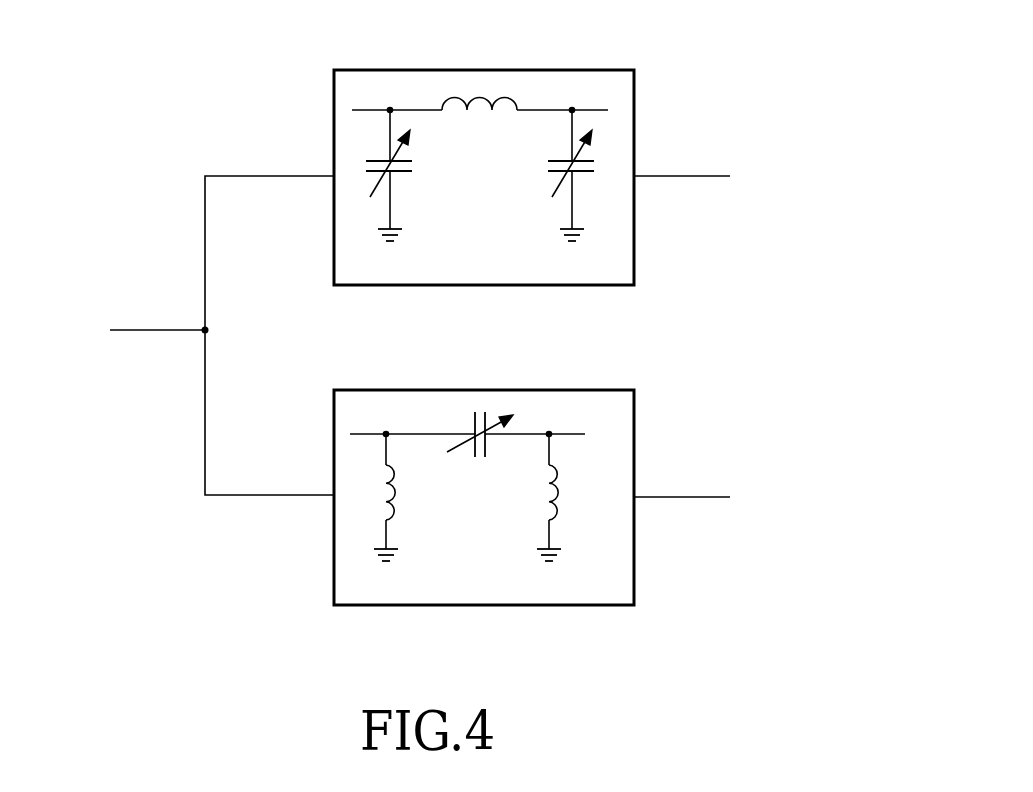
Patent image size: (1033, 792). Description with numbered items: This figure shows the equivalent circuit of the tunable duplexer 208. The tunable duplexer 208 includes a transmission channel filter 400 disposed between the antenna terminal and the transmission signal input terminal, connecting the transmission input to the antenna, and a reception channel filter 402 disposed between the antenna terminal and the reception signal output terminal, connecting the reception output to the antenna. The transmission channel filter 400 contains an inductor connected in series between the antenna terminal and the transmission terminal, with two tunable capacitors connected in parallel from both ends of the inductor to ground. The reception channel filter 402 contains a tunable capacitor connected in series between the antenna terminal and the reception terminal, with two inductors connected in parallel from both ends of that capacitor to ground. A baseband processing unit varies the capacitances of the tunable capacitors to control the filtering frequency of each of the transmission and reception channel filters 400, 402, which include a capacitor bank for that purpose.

The tunable duplexer 208 is at (782, 320).
The transmission channel filter 400 is at (483, 69).
The reception channel filter 402 is at (483, 390).